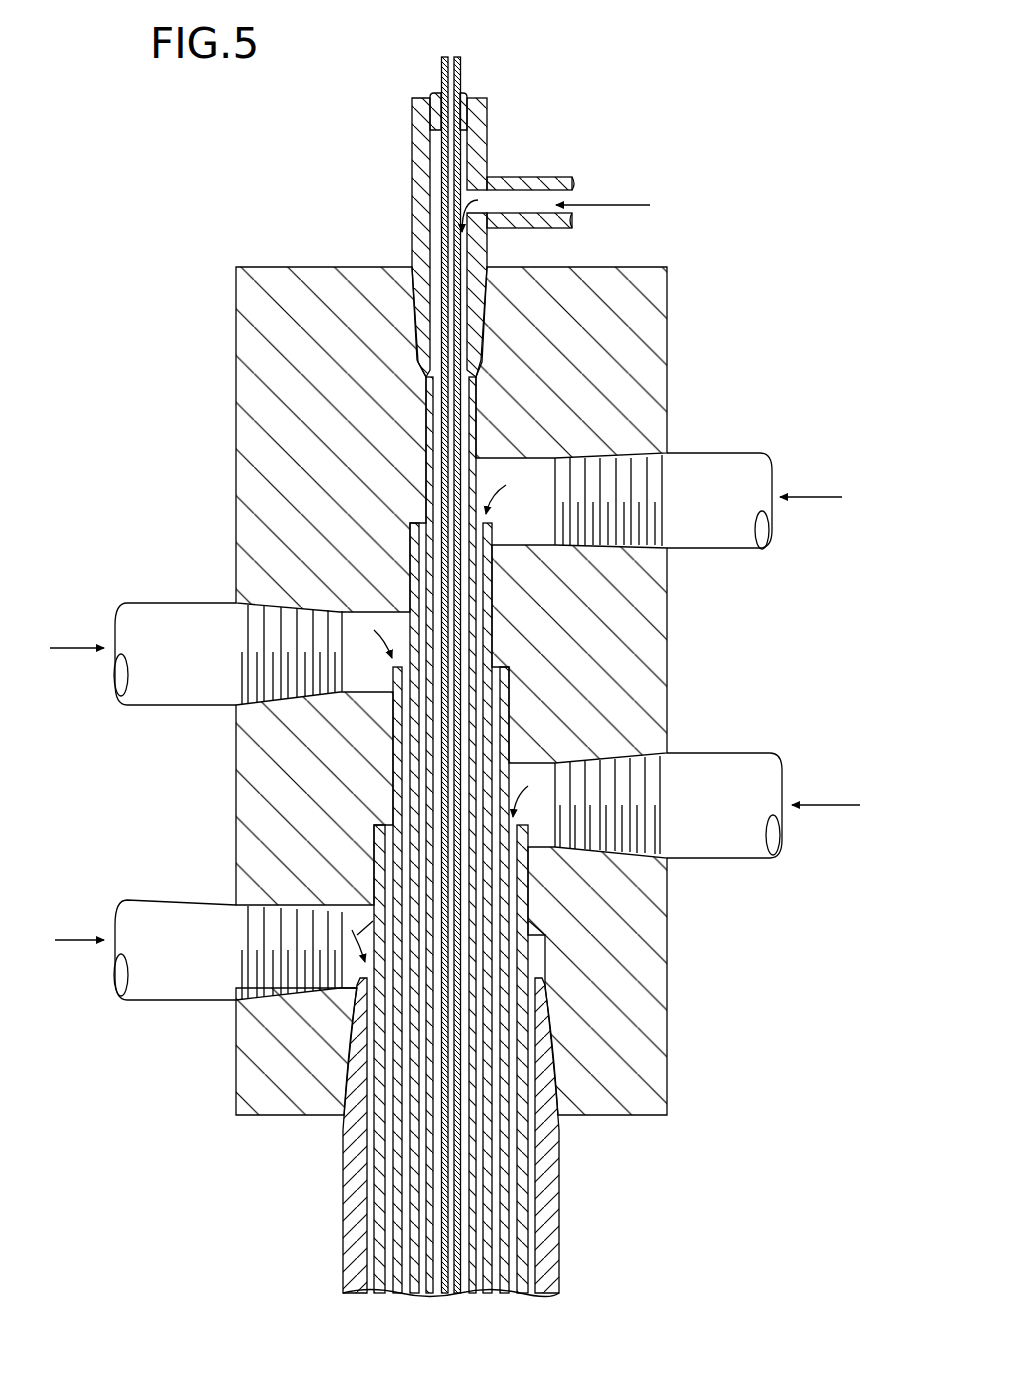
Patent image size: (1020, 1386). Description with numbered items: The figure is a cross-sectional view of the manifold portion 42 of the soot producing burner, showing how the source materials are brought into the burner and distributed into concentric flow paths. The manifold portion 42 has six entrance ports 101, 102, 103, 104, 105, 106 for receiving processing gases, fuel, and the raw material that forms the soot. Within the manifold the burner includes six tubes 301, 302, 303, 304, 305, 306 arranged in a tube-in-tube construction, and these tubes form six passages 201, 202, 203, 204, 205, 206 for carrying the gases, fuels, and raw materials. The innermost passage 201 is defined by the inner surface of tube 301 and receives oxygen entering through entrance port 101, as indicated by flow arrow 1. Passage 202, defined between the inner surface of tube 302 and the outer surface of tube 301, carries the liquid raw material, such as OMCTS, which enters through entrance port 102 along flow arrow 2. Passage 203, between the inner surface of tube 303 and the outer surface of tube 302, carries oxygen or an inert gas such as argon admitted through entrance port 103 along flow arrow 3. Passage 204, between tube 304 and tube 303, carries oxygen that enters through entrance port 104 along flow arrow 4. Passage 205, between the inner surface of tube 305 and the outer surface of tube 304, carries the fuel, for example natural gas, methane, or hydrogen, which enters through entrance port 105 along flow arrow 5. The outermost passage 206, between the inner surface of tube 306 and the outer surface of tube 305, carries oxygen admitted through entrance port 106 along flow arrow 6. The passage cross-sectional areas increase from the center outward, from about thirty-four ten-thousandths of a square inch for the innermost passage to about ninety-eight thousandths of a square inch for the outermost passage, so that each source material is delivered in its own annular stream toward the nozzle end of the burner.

The flow arrow 1 is at (457, 50).
The flow arrow 2 is at (612, 206).
The flow arrow 3 is at (819, 484).
The flow arrow 4 is at (72, 650).
The flow arrow 5 is at (851, 817).
The flow arrow 6 is at (72, 944).
The manifold portion 42 is at (668, 382).
The entrance port 101 is at (440, 52).
The entrance port 102 is at (522, 177).
The entrance port 103 is at (727, 457).
The entrance port 104 is at (190, 604).
The entrance port 105 is at (742, 753).
The entrance port 106 is at (160, 905).
The passage 201 is at (452, 1212).
The passage 202 is at (440, 1232).
The passage 203 is at (428, 1293).
The passage 204 is at (408, 1287).
The passage 205 is at (374, 1287).
The passage 206 is at (372, 1265).
The tube 301 is at (432, 92).
The tube 302 is at (424, 385).
The tube 303 is at (490, 595).
The tube 304 is at (385, 835).
The tube 305 is at (535, 938).
The tube 306 is at (352, 1187).